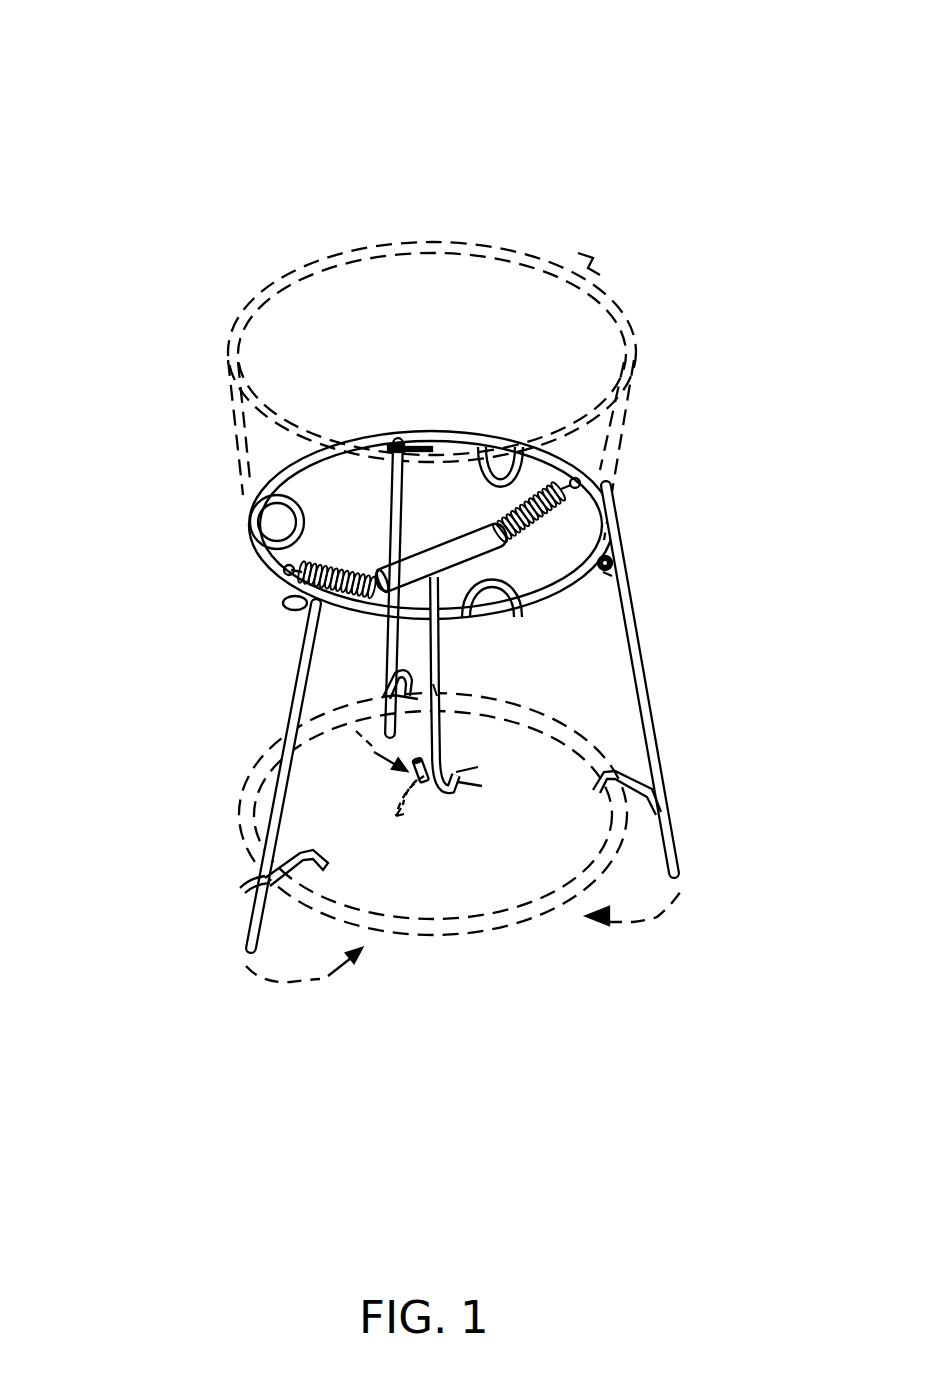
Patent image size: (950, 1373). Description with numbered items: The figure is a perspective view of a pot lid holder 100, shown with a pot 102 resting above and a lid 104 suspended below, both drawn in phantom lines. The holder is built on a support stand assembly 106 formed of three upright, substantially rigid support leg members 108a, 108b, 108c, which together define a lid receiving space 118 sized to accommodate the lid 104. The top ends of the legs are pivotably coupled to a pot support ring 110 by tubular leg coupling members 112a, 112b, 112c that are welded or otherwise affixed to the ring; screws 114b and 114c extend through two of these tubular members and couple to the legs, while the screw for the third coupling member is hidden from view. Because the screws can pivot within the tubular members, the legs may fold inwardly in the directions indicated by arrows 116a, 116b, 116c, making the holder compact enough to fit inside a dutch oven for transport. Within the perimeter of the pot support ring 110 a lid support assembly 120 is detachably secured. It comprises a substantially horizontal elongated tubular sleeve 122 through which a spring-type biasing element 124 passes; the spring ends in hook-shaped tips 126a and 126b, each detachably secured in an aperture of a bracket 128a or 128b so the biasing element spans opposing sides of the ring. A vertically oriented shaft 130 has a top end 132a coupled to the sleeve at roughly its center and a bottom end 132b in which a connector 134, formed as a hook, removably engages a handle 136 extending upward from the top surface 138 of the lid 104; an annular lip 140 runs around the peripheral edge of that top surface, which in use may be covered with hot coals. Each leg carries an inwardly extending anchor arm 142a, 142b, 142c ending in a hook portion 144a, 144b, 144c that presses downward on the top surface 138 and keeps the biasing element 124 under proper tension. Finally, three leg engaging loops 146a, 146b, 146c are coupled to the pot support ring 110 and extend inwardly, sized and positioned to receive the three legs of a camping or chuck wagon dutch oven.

The pot lid holder 100 is at (98, 62).
The pot 102 is at (413, 268).
The lid 104 is at (512, 920).
The support stand assembly 106 is at (205, 677).
The support leg member 108a is at (302, 692).
The support leg member 108b is at (643, 697).
The support leg member 108c is at (373, 453).
The pot support ring 110 is at (617, 485).
The leg coupling member 112a is at (310, 610).
The leg coupling member 112b is at (614, 550).
The leg coupling member 112c is at (420, 448).
The screw 114b is at (612, 570).
The screw 114c is at (438, 452).
The arrow 116a is at (316, 982).
The arrow 116b is at (643, 920).
The arrow 116c is at (362, 733).
The lid receiving space 118 is at (476, 1036).
The lid support assembly 120 is at (379, 550).
The tubular sleeve 122 is at (477, 553).
The biasing element 124 is at (540, 523).
The hook-shaped tip 126a is at (263, 547).
The hook-shaped tip 126b is at (581, 475).
The bracket 128a is at (283, 587).
The bracket 128b is at (602, 488).
The shaft 130 is at (442, 688).
The top end 132a is at (432, 577).
The bottom end 132b is at (440, 745).
The connector 134 is at (455, 790).
The handle 136 is at (405, 808).
The top surface 138 is at (437, 893).
The annular lip 140 is at (268, 870).
The anchor arm 142a is at (293, 860).
The anchor arm 142b is at (657, 788).
The anchor arm 142c is at (388, 697).
The hook portion 144a is at (268, 868).
The hook portion 144b is at (657, 810).
The hook portion 144c is at (380, 700).
The leg engaging loop 146a is at (283, 507).
The leg engaging loop 146b is at (513, 587).
The leg engaging loop 146c is at (510, 448).